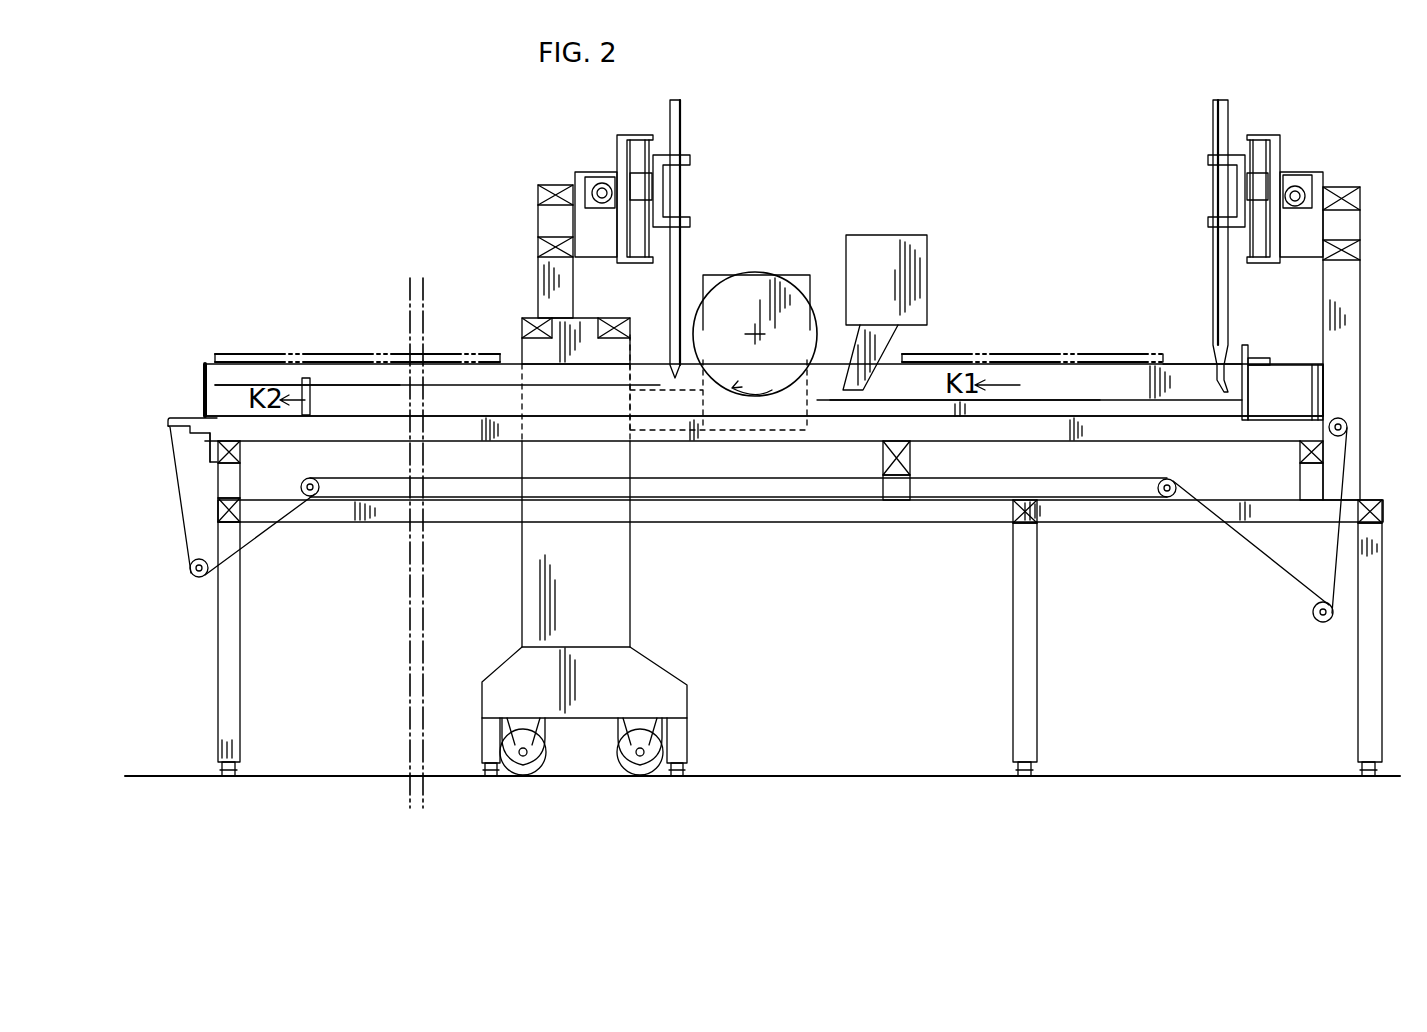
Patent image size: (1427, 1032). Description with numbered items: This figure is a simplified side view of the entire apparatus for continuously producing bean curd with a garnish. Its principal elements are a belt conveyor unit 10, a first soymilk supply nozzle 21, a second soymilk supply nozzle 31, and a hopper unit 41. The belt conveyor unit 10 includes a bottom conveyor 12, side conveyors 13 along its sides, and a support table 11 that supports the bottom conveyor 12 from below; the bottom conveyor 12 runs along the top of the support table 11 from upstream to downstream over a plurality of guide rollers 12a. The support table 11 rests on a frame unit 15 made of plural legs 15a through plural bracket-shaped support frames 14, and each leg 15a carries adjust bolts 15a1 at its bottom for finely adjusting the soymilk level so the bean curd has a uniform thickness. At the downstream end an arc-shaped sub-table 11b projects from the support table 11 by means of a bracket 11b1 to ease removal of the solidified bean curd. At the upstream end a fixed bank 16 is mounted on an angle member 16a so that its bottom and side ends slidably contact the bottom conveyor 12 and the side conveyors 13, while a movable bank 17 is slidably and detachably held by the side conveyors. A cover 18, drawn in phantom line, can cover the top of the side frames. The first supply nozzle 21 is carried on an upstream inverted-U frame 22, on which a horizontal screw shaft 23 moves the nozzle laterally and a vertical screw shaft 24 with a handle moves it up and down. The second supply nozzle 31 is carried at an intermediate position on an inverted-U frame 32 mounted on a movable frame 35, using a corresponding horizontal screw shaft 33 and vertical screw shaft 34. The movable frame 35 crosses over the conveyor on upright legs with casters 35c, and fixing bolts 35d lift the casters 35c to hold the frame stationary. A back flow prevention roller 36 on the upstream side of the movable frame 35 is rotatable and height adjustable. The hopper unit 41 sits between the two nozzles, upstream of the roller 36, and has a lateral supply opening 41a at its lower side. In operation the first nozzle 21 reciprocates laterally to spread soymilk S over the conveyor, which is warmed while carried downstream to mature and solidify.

The belt conveyor unit 10 is at (205, 388).
The support table 11 is at (1165, 432).
The sub-table 11b is at (215, 413).
The bracket 11b1 is at (210, 450).
The bottom conveyor 12 is at (1345, 478).
The guide rollers 12a is at (192, 580).
The side conveyors 13 is at (1185, 372).
The support frames 14 is at (232, 478).
The frame unit 15 is at (792, 515).
The legs 15a is at (240, 658).
The adjust bolts 15a1 is at (234, 772).
The fixed bank 16 is at (1250, 385).
The angle member 16a is at (1262, 360).
The movable bank 17 is at (316, 392).
The cover 18 is at (322, 350).
The first soymilk supply nozzle 21 is at (1213, 255).
The frame 22 is at (1347, 292).
The screw shaft 23 is at (1295, 184).
The screw shaft 24 is at (1252, 248).
The second soymilk supply nozzle 31 is at (683, 258).
The frame 32 is at (538, 272).
The screw shaft 33 is at (602, 184).
The screw shaft 34 is at (652, 135).
The movable frame 35 is at (612, 578).
The casters 35c is at (523, 778).
The fixing bolts 35d is at (485, 770).
The back flow prevention roller 36 is at (755, 278).
The hopper unit 41 is at (880, 250).
The supply opening 41a is at (878, 338).
The soymilk S is at (483, 396).